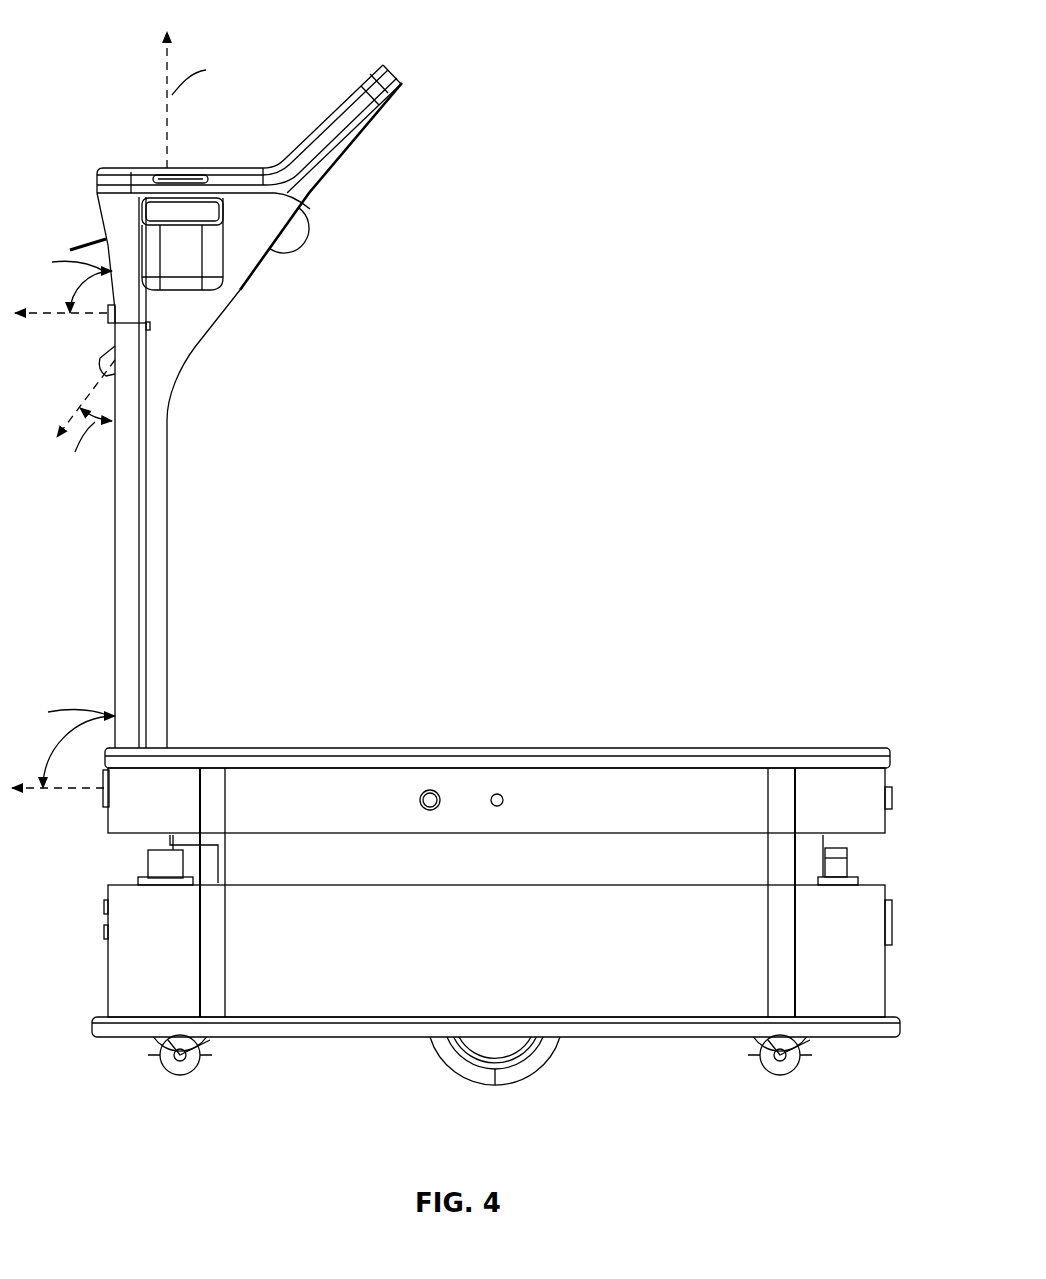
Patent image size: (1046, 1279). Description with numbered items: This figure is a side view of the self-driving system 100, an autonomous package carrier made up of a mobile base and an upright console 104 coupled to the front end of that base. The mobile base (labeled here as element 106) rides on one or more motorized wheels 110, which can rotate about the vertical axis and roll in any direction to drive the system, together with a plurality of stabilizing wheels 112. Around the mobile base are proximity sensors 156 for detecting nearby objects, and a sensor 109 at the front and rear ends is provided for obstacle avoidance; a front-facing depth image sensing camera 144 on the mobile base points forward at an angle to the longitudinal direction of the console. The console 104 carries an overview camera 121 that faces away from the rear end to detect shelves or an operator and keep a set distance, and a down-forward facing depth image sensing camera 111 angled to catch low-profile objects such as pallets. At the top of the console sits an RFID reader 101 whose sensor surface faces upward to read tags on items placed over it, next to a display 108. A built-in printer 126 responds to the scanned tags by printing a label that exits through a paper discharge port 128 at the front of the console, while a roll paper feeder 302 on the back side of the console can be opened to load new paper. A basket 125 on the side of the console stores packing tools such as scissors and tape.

The self-driving system 100 is at (428, 40).
The RFID reader 101 is at (150, 170).
The console 104 is at (167, 490).
The base 106 is at (703, 748).
The display 108 is at (364, 134).
The sensor 109 is at (500, 795).
The motorized wheel 110 is at (510, 1083).
The depth image sensing camera 111 is at (100, 358).
The stabilizing wheel 112 is at (197, 1085).
The camera 121 is at (110, 316).
The basket 125 is at (190, 257).
The printer 126 is at (258, 280).
The paper discharge port 128 is at (96, 240).
The depth image sensing camera 144 is at (103, 800).
The sensor 156 is at (145, 866).
The roll paper feeder 302 is at (305, 243).